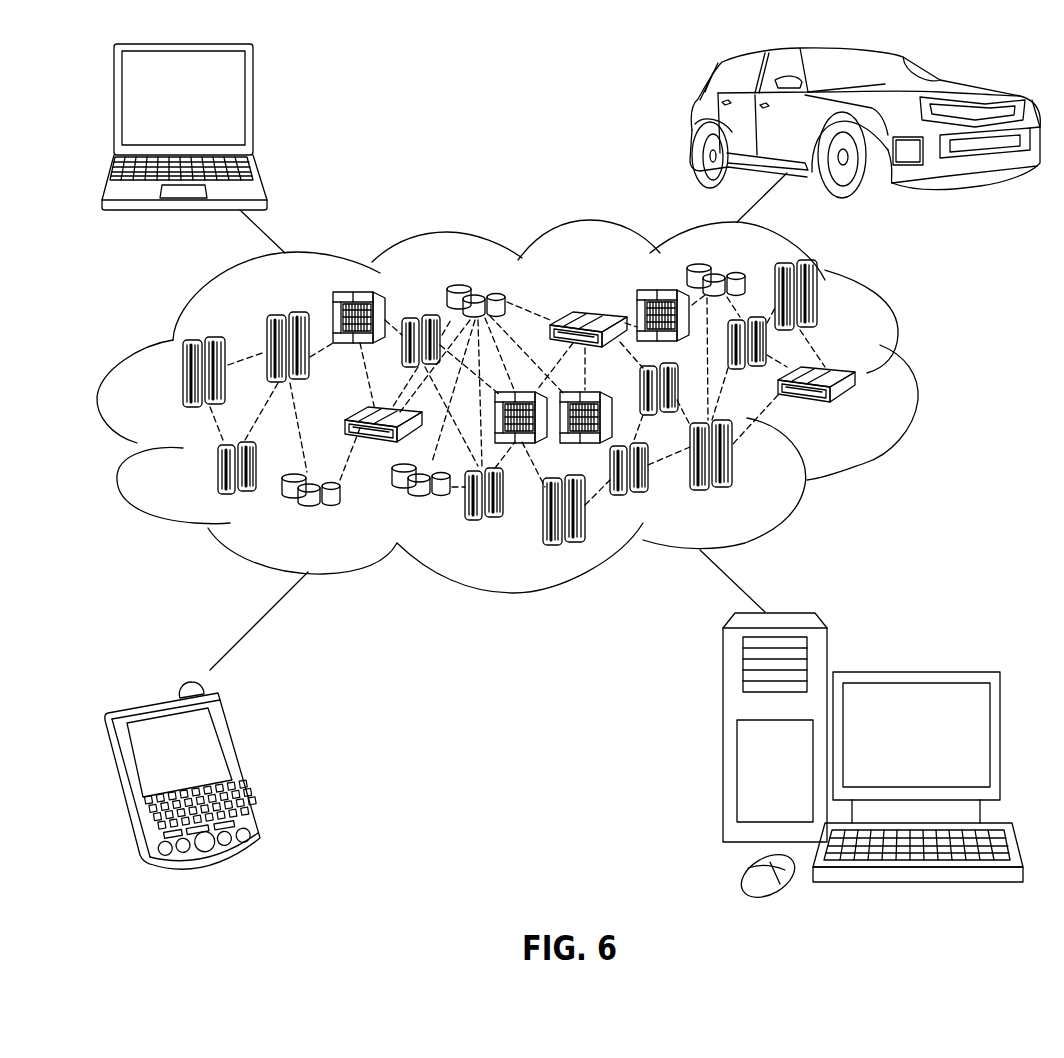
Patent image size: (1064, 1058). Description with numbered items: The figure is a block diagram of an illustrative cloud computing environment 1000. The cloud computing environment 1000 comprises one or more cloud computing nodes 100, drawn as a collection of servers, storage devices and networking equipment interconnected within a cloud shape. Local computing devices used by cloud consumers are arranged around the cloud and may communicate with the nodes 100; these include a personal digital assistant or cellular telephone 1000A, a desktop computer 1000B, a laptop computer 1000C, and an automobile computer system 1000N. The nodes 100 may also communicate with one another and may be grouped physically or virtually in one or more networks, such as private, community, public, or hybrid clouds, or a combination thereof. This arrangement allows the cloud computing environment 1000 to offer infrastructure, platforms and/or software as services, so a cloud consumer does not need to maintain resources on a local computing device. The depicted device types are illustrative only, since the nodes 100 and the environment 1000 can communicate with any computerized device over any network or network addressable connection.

The cloud computing environment 1000 is at (917, 382).
The cloud computing nodes 100 is at (860, 413).
The personal digital assistant (PDA) or cellular telephone 1000A is at (242, 765).
The desktop computer 1000B is at (913, 670).
The laptop computer 1000C is at (255, 105).
The automobile computer system 1000N is at (693, 122).